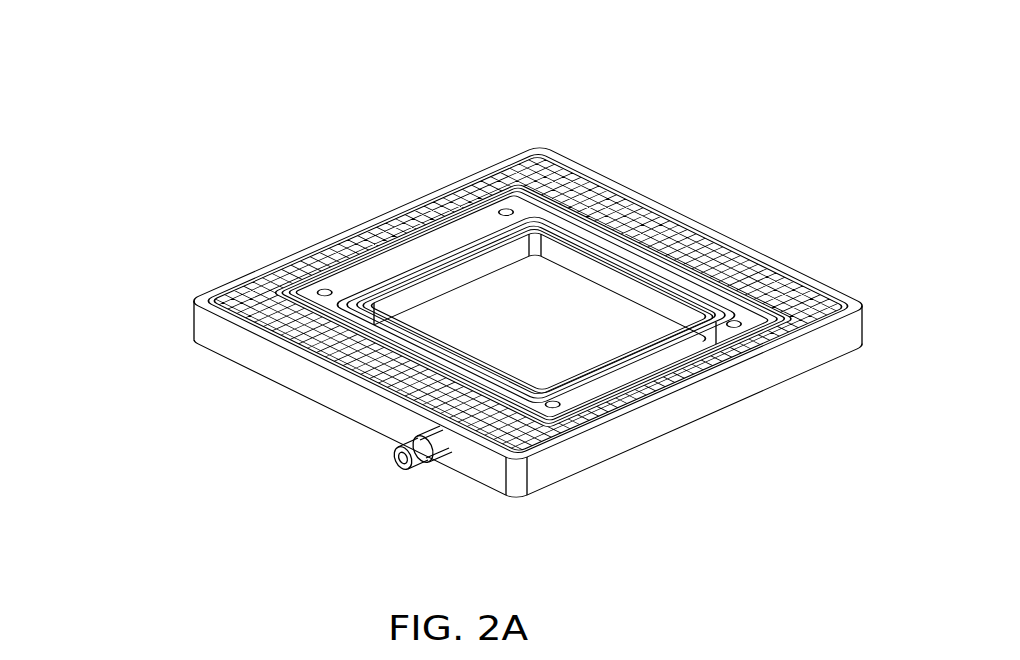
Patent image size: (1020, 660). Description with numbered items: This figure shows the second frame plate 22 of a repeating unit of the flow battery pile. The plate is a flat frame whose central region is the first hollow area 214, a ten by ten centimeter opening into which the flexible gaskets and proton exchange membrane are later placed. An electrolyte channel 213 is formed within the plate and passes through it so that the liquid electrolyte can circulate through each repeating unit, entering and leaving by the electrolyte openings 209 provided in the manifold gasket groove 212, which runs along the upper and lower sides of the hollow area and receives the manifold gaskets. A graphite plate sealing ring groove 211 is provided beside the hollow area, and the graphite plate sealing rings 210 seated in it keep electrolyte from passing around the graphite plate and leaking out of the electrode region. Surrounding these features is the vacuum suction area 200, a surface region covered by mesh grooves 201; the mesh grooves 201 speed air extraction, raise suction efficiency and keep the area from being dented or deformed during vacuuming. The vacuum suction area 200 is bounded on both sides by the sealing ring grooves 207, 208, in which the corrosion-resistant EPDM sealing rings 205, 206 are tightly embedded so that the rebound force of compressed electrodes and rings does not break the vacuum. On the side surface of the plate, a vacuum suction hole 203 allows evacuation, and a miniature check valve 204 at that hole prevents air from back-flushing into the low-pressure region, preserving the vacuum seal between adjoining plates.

The second frame plate 22 is at (518, 88).
The vacuum suction area 200 is at (400, 404).
The mesh grooves 201 is at (350, 377).
The vacuum suction hole 203 is at (435, 437).
The miniature check valve 204 is at (637, 190).
The vacuum suction sealing ring 205 is at (232, 340).
The vacuum suction sealing ring 206 is at (208, 320).
The sealing ring groove 207 is at (220, 284).
The sealing ring groove 208 is at (212, 312).
The electrolyte openings 209 is at (275, 262).
The graphite plate sealing rings 210 is at (330, 268).
The graphite plate sealing ring groove 211 is at (352, 246).
The manifold gasket groove 212 is at (400, 232).
The electrolyte channel 213 is at (445, 212).
The first hollow area 214 is at (575, 346).